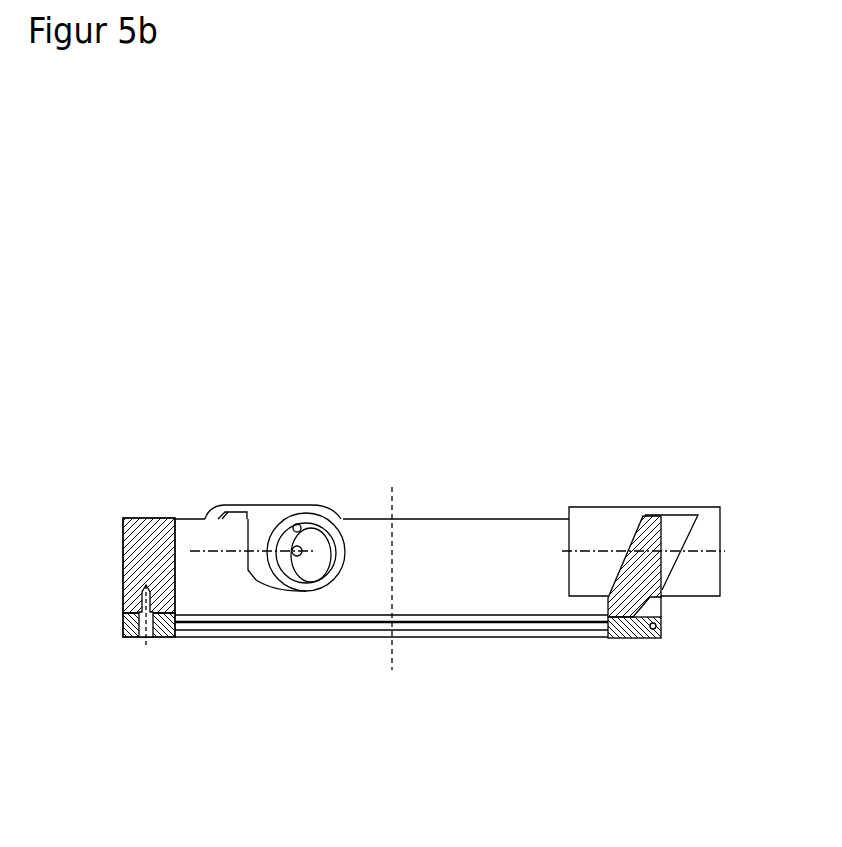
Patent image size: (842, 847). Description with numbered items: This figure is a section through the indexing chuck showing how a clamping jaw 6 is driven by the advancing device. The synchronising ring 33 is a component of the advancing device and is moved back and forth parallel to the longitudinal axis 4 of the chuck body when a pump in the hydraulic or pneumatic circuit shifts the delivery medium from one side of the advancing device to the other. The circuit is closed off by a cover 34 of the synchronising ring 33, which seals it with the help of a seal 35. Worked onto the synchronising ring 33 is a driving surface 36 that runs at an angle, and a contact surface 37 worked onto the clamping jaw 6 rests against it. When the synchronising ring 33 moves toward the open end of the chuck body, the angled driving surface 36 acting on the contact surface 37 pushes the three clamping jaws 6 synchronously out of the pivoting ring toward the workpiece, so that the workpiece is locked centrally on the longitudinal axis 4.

The longitudinal axis 4 is at (395, 486).
The clamping jaw 6 is at (268, 517).
The synchronising ring 33 is at (148, 553).
The cover 34 is at (640, 638).
The seal 35 is at (125, 623).
The driving surface 36 is at (650, 610).
The contact surface 37 is at (648, 517).